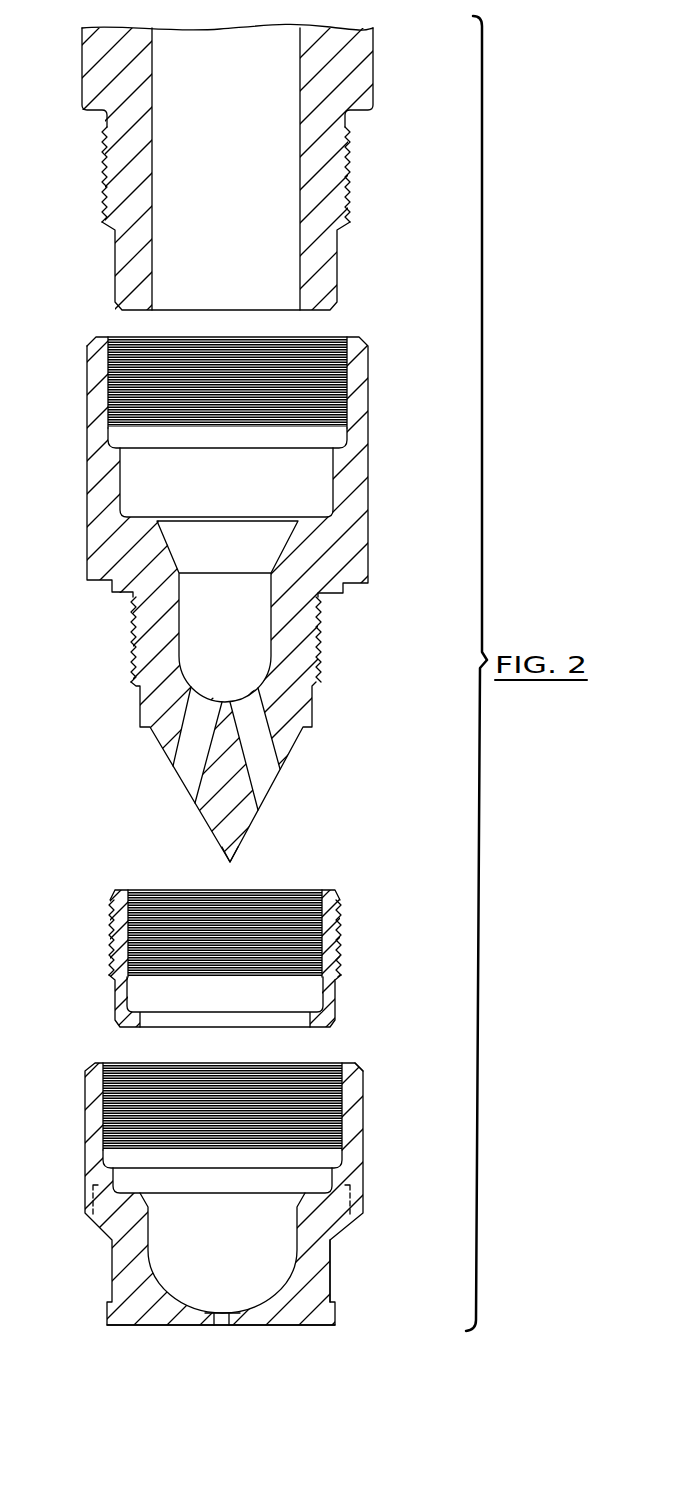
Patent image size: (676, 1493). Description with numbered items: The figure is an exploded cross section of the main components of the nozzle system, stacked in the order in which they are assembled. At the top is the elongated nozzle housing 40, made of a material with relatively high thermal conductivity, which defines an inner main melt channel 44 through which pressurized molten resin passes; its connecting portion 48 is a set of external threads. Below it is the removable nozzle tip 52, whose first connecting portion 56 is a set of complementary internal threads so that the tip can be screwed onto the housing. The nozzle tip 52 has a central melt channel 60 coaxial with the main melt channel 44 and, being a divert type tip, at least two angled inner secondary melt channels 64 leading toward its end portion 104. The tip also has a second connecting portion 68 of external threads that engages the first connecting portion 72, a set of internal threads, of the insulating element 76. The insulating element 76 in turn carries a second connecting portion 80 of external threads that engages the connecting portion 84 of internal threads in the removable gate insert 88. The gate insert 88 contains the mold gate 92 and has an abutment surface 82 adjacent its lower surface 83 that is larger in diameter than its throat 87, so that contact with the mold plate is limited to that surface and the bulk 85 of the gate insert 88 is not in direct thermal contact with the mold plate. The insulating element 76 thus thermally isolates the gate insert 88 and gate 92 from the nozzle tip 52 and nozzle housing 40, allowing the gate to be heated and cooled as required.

The nozzle housing 40 is at (353, 75).
The main melt channel 44 is at (267, 147).
The connecting portion 48 is at (103, 161).
The nozzle tip 52 is at (357, 442).
The first connecting portion 56 is at (110, 375).
The central melt channel 60 is at (262, 562).
The angled inner secondary melt channels 64 is at (187, 768).
The second connecting portion 68 is at (133, 631).
The first connecting portion 72 is at (132, 921).
The insulating element 76 is at (337, 892).
The second connecting portion 80 is at (110, 948).
The abutment surface 82 is at (336, 1316).
The lower surface 83 is at (282, 1326).
The connecting portion 84 is at (108, 1128).
The bulk 85 is at (362, 1180).
The throat 87 is at (332, 1272).
The gate insert 88 is at (362, 1098).
The mold gate 92 is at (209, 1322).
The end portion 104 is at (234, 864).